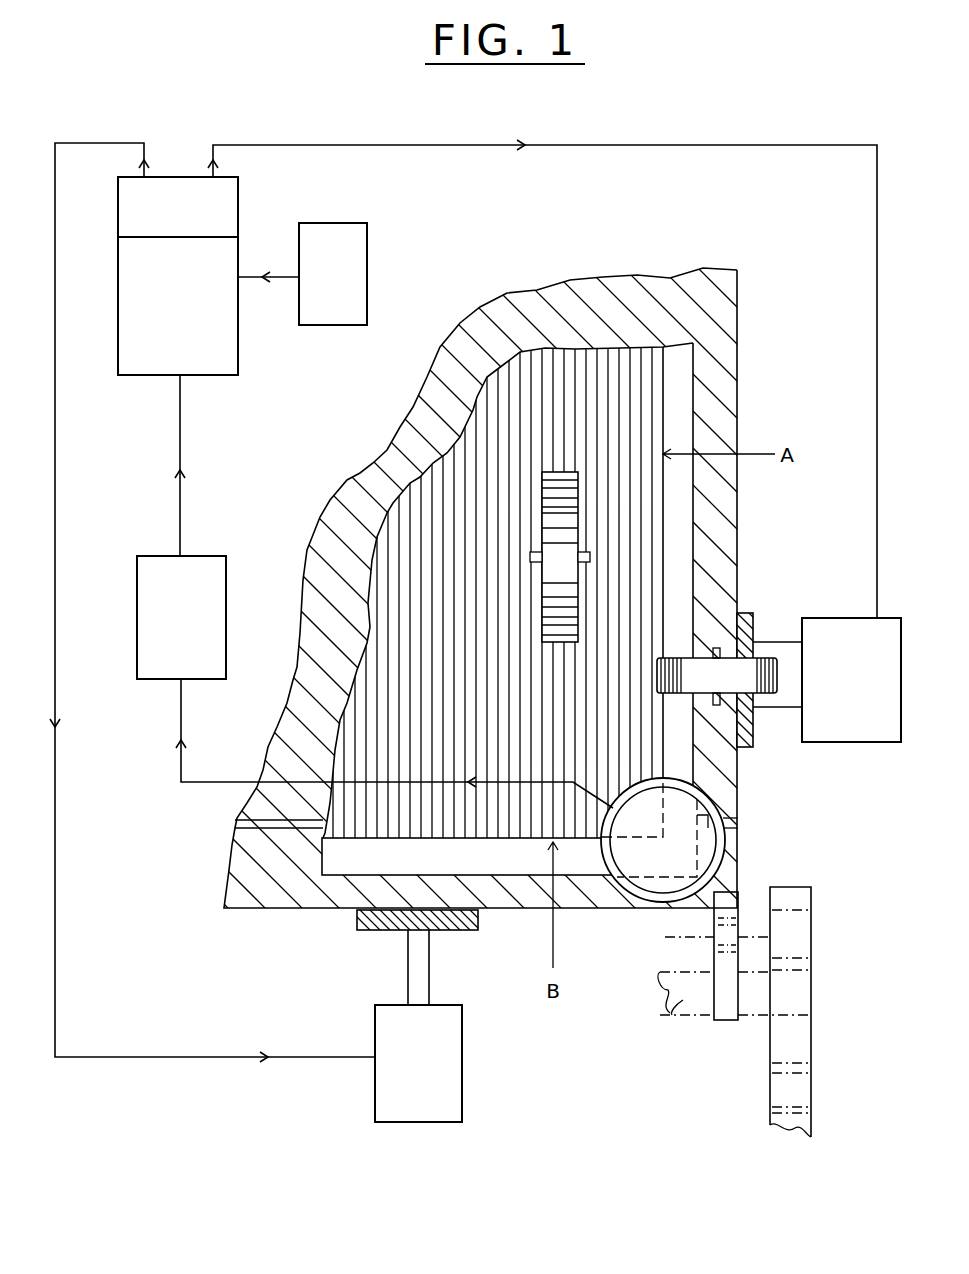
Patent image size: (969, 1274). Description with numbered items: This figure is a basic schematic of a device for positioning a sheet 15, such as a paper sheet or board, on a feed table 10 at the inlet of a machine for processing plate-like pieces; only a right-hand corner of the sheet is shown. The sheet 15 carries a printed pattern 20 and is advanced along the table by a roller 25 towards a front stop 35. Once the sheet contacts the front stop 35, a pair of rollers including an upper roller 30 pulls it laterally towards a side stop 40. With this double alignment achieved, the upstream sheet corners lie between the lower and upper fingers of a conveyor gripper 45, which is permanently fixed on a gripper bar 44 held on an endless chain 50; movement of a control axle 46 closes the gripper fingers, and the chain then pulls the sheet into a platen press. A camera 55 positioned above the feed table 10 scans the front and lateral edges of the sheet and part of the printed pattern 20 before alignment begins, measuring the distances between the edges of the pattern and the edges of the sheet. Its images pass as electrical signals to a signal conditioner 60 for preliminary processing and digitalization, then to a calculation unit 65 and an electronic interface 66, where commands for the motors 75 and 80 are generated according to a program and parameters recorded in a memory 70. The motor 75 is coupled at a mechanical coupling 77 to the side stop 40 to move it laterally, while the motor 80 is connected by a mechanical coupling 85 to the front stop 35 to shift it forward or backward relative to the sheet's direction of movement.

The feed table 10 is at (520, 310).
The sheet 15 is at (678, 543).
The printed pattern 20 is at (437, 677).
The roller 25 is at (540, 510).
The upper roller 30 is at (717, 650).
The front stop 35 is at (358, 930).
The side stop 40 is at (753, 748).
The gripper bar 44 is at (683, 1002).
The conveyor gripper 45 is at (730, 905).
The control axle 46 is at (753, 945).
The endless chain 50 is at (800, 1033).
The camera 55 is at (720, 840).
The signal conditioner 60 is at (167, 633).
The calculation unit 65 is at (165, 307).
The electronic interface 66 is at (165, 227).
The memory 70 is at (319, 306).
The motor 75 is at (837, 693).
The mechanical coupling 77 is at (787, 710).
The motor 80 is at (404, 1065).
The mechanical coupling 85 is at (430, 970).